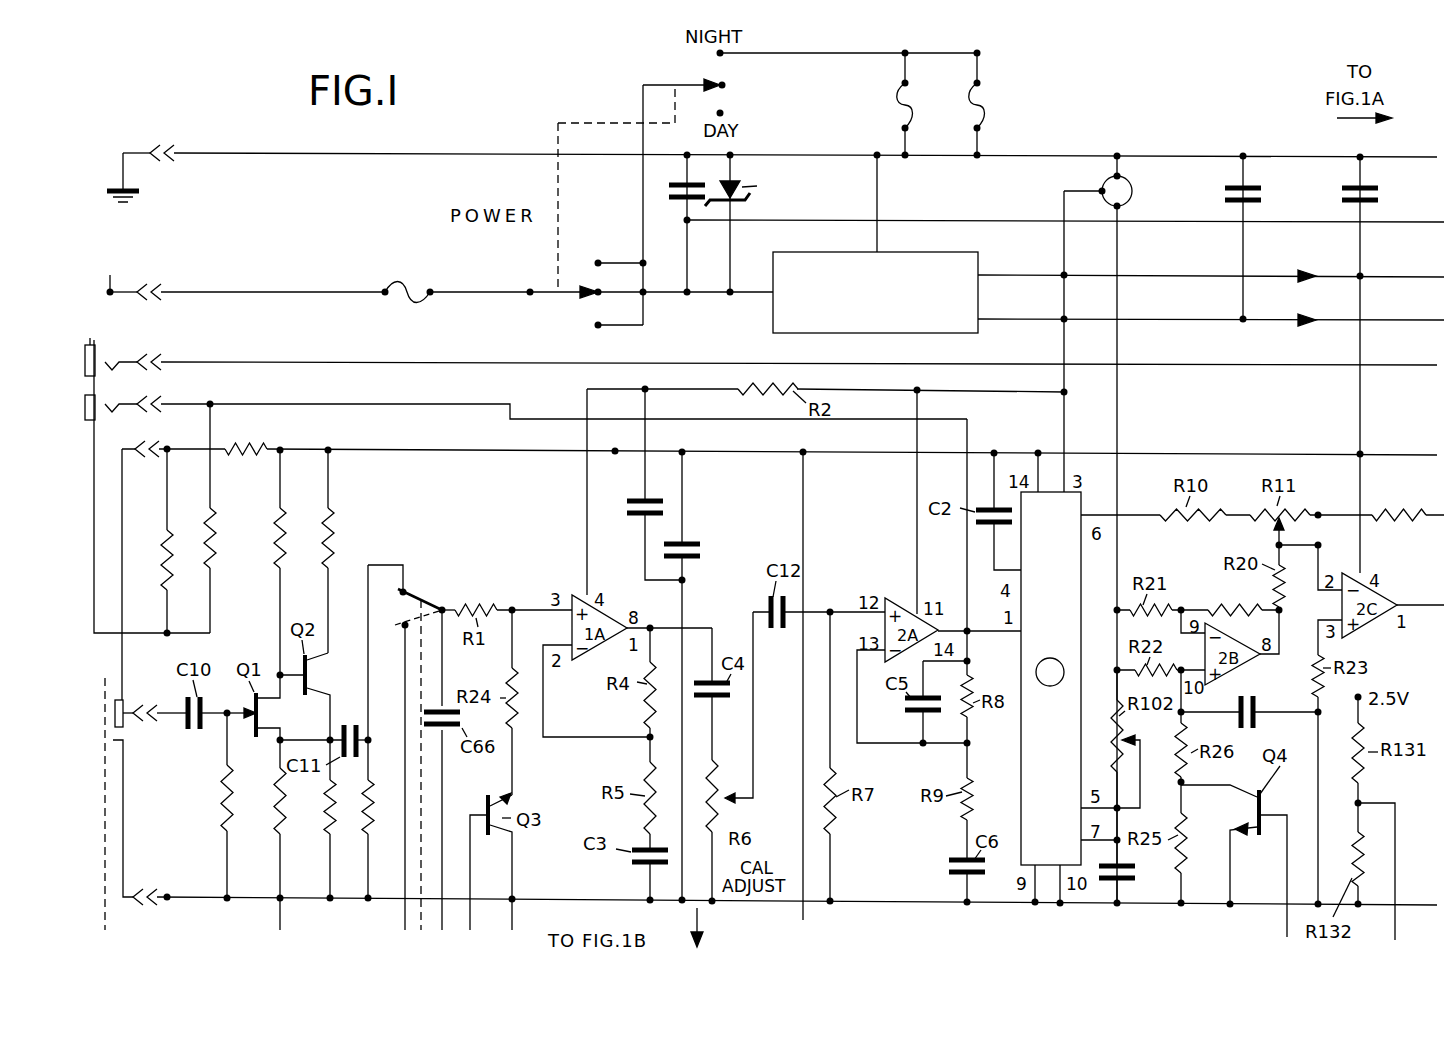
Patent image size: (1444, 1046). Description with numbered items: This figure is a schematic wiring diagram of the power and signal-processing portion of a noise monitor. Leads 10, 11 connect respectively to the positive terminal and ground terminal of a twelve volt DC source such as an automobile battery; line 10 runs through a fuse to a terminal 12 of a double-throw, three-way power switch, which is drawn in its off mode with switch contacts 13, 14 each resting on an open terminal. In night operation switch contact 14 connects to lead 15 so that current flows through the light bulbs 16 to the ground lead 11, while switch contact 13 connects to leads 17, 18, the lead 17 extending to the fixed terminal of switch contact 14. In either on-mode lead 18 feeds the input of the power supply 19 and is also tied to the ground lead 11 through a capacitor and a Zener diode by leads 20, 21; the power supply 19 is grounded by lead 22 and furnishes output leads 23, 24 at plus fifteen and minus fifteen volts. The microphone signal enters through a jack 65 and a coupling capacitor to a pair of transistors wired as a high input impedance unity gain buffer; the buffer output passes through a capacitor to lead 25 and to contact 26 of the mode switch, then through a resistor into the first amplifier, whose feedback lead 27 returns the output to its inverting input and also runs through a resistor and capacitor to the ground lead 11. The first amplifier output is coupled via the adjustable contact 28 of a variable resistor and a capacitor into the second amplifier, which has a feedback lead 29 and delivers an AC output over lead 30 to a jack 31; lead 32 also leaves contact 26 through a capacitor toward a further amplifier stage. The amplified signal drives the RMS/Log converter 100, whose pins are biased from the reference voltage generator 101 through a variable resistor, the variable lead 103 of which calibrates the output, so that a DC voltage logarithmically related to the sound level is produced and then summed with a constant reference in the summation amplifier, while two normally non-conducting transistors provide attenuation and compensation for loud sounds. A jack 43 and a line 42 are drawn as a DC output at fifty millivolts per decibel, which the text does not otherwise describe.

The lead 10 is at (225, 291).
The ground lead 11 is at (217, 152).
The terminal 12 is at (529, 290).
The switch contact 13 is at (568, 296).
The switch contact 14 is at (655, 82).
The lead 15 is at (807, 53).
The light bulbs 16 is at (896, 101).
The lead 17 is at (641, 197).
The lead 18 is at (663, 298).
The power supply 19 is at (795, 263).
The lead 20 is at (687, 274).
The lead 21 is at (730, 268).
The lead 22 is at (880, 192).
The output lead 23 is at (1178, 276).
The output lead 24 is at (1187, 314).
The lead 25 is at (380, 565).
The switch contact 26 is at (431, 602).
The feedback lead 27 is at (595, 737).
The adjustable contact 28 is at (752, 721).
The feedback lead 29 is at (859, 732).
The lead 30 is at (441, 404).
The jack 31 is at (92, 412).
The lead 32 is at (445, 673).
The DC output line 42 is at (180, 356).
The DC output jack 43 is at (88, 345).
The jack 65 is at (117, 689).
The RMS/Log converter 100 is at (1032, 783).
The reference voltage generator 101 is at (1127, 192).
The variable lead 103 is at (1126, 764).